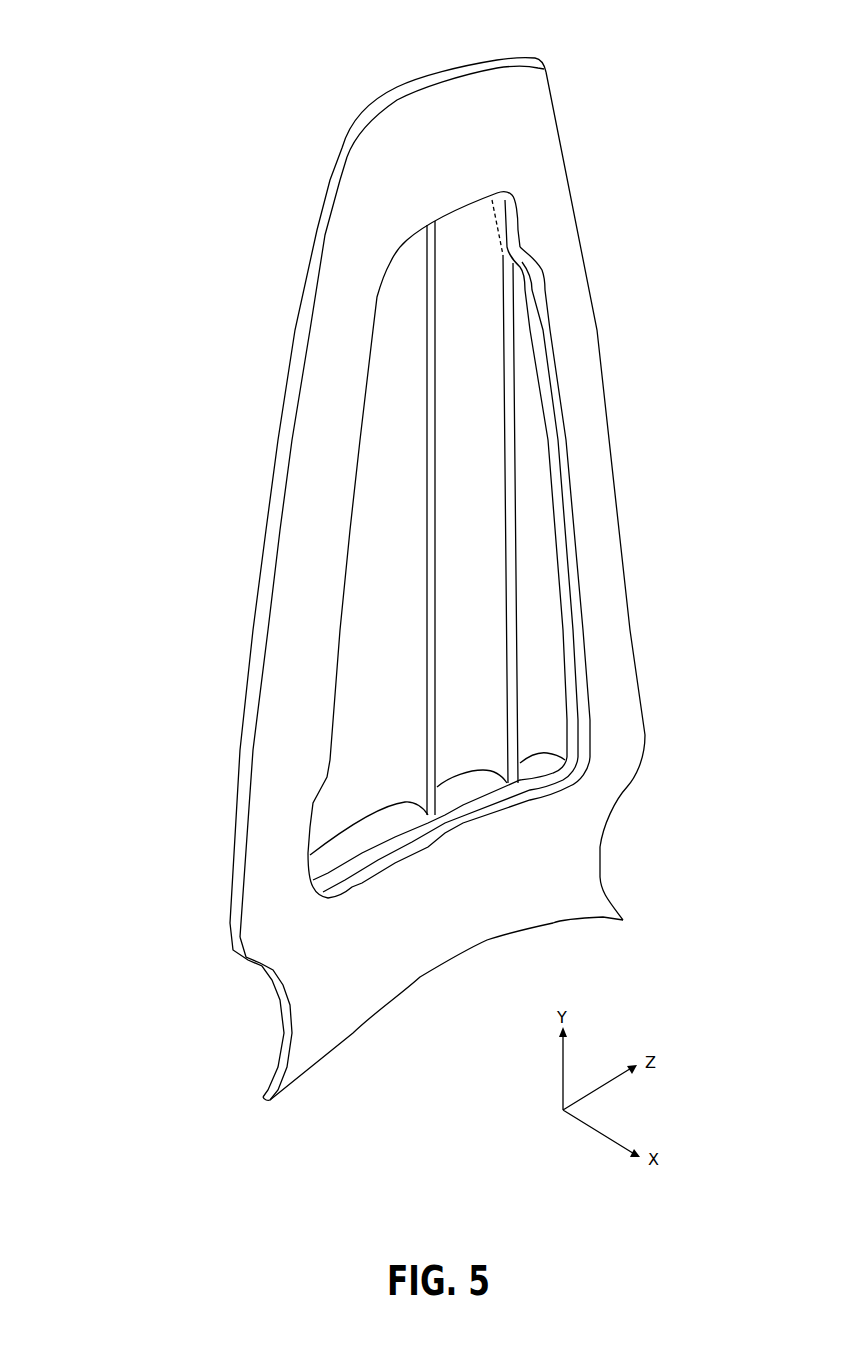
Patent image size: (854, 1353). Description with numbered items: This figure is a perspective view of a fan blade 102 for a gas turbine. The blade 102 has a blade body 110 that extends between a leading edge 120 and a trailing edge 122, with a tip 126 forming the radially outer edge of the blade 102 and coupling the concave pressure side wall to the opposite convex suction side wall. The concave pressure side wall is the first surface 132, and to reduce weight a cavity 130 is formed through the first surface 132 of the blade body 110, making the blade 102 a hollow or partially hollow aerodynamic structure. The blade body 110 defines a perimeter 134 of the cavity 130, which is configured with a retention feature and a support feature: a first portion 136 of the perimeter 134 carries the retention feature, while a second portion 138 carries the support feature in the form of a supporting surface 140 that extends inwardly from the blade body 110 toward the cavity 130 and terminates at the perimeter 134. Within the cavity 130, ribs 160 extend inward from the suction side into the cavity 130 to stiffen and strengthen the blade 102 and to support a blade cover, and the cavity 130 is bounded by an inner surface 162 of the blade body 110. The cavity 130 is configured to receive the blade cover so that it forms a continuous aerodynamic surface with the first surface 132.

The blade 102 is at (157, 75).
The blade body 110 is at (583, 333).
The leading edge 120 is at (272, 513).
The trailing edge 122 is at (640, 600).
The tip 126 is at (503, 80).
The cavity 130 is at (538, 557).
The first surface 132 is at (322, 617).
The perimeter 134 is at (337, 693).
The first portion 136 is at (407, 240).
The second portion 138 is at (570, 786).
The supporting surface 140 is at (438, 817).
The ribs 160 is at (423, 537).
The inner surface 162 is at (489, 689).